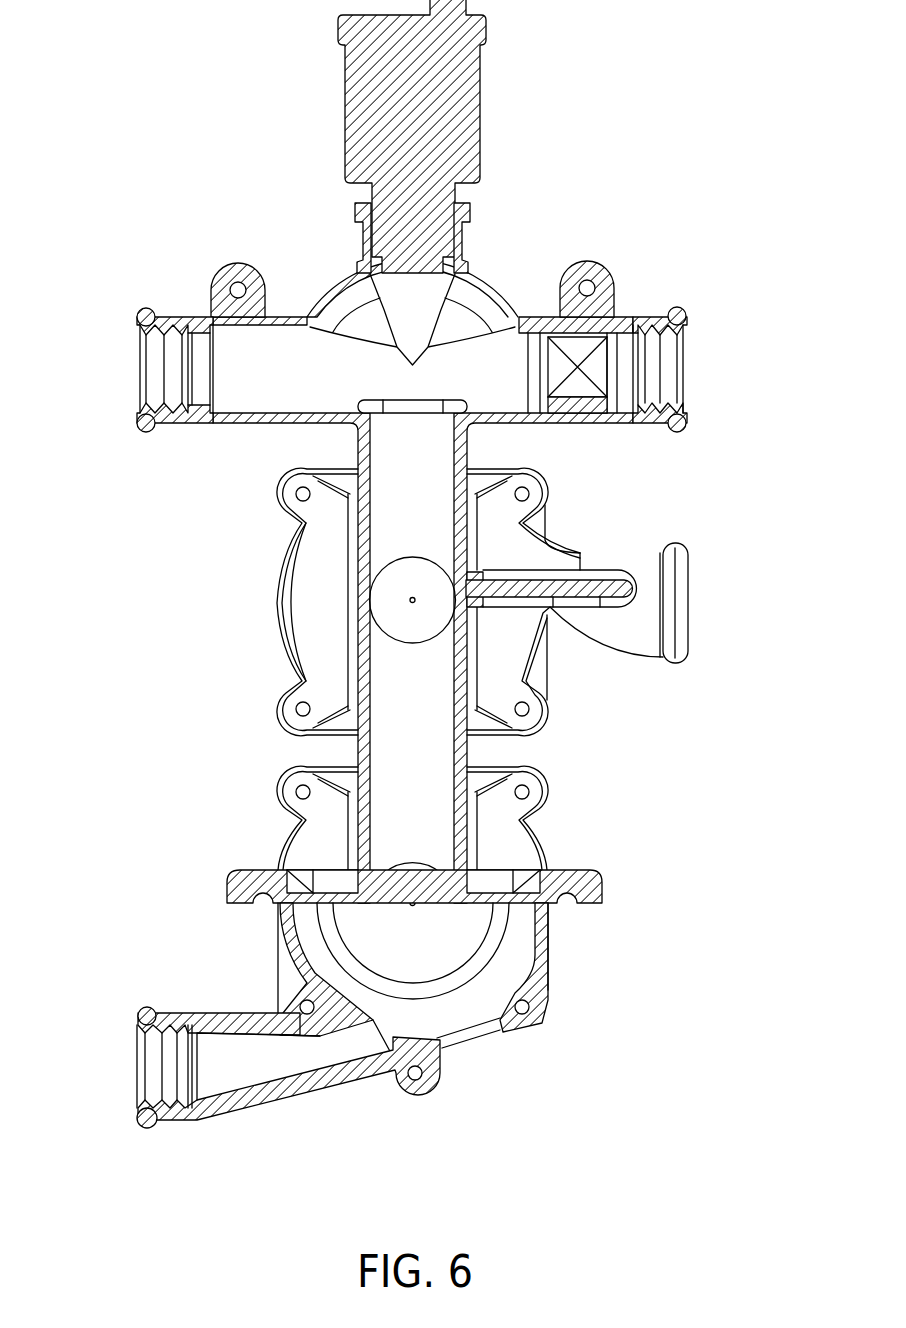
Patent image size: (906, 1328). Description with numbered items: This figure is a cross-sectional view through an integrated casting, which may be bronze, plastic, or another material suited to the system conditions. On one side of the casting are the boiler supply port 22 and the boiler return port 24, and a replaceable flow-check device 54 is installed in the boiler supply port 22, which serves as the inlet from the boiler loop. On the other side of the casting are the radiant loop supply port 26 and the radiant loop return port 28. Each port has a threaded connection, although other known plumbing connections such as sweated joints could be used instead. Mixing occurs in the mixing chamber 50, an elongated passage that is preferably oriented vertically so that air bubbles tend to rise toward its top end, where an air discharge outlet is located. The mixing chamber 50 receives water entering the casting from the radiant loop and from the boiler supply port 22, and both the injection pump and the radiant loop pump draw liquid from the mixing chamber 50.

The boiler supply port 22 is at (687, 340).
The boiler return port 24 is at (688, 597).
The radiant loop supply port 26 is at (135, 1071).
The radiant loop return port 28 is at (138, 377).
The mixing chamber 50 is at (430, 707).
The flow-check device 54 is at (600, 350).